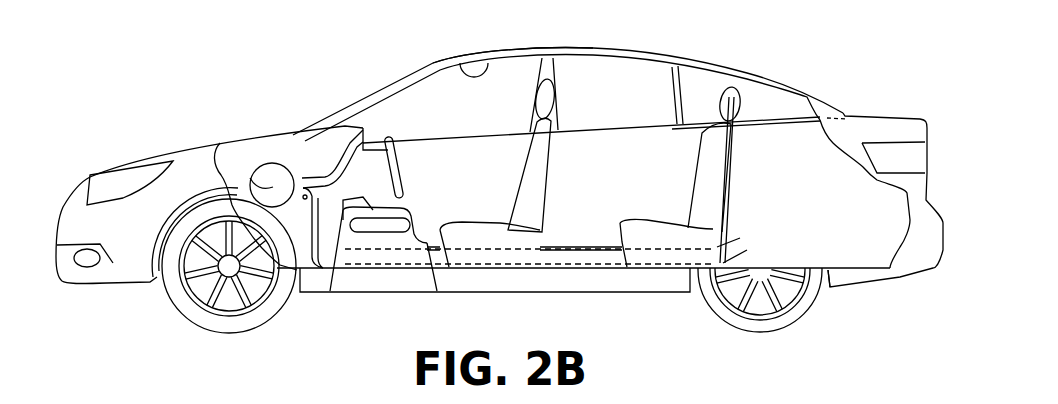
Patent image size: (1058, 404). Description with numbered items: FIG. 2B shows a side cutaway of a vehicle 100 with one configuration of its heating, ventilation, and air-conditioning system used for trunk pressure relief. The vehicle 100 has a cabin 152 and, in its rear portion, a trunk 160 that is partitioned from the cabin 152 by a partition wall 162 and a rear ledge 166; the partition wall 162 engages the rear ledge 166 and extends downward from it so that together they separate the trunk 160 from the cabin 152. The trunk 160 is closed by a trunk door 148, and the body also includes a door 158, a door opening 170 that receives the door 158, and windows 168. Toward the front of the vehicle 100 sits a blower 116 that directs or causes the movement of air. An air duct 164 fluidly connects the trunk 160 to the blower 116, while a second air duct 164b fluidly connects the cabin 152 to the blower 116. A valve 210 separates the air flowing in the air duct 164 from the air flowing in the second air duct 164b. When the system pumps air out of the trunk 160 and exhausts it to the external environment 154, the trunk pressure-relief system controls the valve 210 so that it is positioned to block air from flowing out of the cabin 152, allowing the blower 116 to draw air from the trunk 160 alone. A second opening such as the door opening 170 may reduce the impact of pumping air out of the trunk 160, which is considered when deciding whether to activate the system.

The vehicle 100 is at (357, 100).
The blower 116 is at (220, 143).
The trunk door 148 is at (878, 117).
The cabin 152 is at (437, 185).
The external environment 154 is at (222, 50).
The door 158 is at (407, 278).
The trunk 160 is at (784, 201).
The partition wall 162 is at (723, 183).
The air duct 164 is at (572, 248).
The second air duct 164b is at (328, 143).
The rear ledge 166 is at (768, 118).
The window 168 is at (433, 100).
The door opening 170 is at (485, 58).
The valve 210 is at (288, 178).